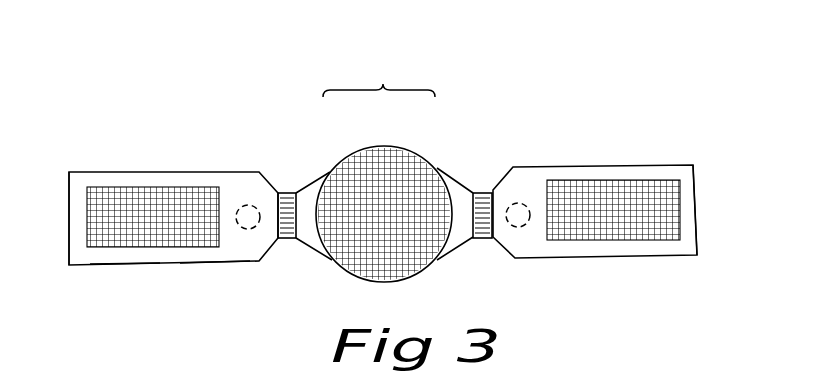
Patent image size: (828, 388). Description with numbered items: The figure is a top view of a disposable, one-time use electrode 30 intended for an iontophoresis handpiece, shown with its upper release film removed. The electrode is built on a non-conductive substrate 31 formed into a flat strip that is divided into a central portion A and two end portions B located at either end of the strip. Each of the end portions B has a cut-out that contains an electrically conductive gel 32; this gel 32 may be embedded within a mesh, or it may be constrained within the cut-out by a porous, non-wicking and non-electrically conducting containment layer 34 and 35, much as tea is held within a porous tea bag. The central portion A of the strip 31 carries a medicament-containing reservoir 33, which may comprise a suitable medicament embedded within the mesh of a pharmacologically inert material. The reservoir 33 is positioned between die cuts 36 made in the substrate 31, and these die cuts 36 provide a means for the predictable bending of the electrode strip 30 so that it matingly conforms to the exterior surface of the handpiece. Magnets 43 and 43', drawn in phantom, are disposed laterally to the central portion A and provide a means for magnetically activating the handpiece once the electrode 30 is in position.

The disposable electrode 30 is at (503, 120).
The non-conductive substrate 31 is at (157, 172).
The electrically conductive gel 32 is at (117, 190).
The medicament-containing reservoir 33 is at (350, 152).
The containment layer 34 is at (222, 250).
The containment layer 35 is at (127, 253).
The die cuts 36 is at (285, 245).
The magnet 43 is at (255, 163).
The magnet 43' is at (541, 161).
The central portion A is at (379, 75).
The end portions B is at (87, 170).